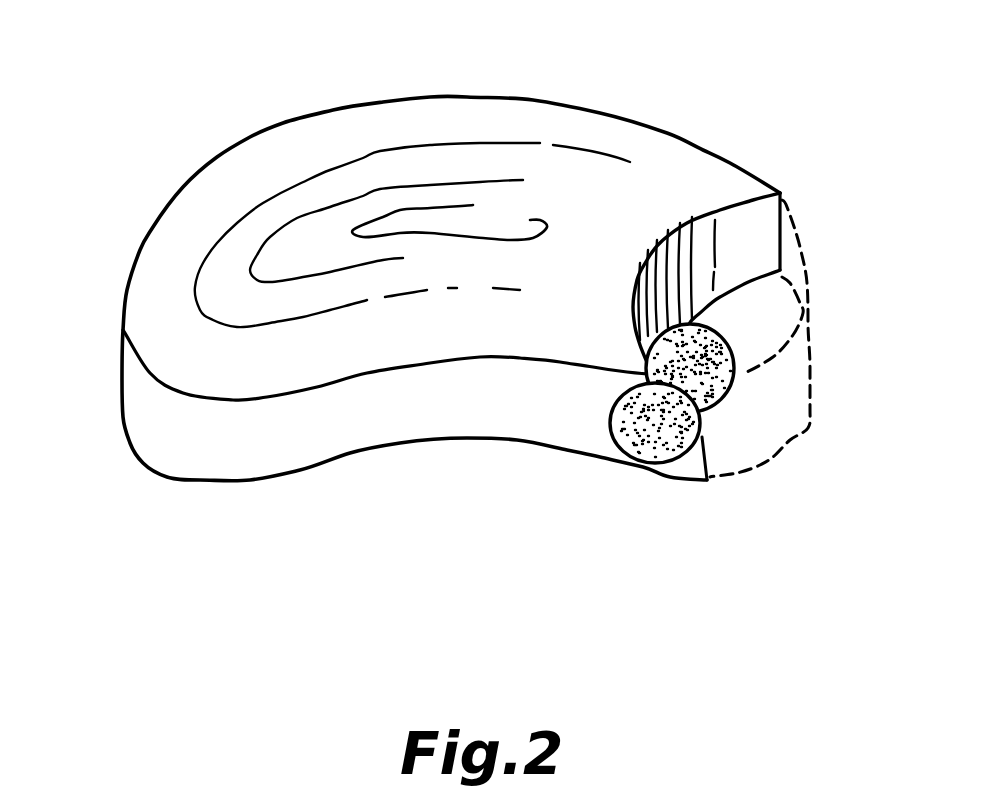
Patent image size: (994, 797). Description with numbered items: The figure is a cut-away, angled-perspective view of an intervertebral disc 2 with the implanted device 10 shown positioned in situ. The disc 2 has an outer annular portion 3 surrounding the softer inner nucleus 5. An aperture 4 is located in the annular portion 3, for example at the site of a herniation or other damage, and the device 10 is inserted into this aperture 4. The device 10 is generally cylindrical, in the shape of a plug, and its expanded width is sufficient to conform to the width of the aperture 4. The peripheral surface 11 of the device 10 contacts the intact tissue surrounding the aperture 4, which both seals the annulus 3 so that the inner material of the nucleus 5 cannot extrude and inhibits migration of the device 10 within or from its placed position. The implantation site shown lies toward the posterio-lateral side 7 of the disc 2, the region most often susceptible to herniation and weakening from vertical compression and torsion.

The intervertebral disc 2 is at (240, 140).
The annular portion 3 is at (162, 243).
The aperture 4 is at (612, 440).
The nucleus 5 is at (487, 227).
The posterio-lateral side 7 is at (677, 537).
The device 10 is at (732, 418).
The peripheral surface 11 is at (700, 437).